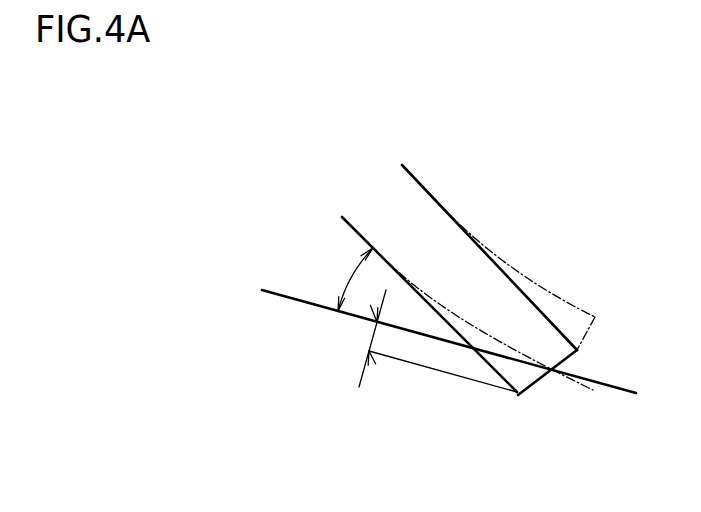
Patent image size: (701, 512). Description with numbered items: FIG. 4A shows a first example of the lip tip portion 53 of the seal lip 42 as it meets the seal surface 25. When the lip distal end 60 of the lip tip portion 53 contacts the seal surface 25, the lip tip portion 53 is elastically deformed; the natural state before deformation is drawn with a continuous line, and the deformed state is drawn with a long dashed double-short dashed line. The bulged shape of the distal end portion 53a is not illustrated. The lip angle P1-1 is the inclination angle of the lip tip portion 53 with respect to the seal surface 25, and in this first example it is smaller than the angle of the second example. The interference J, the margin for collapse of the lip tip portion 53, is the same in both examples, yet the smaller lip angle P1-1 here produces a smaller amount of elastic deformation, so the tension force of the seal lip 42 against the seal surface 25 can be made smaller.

The seal surface 25 is at (276, 293).
The seal lip 42 is at (436, 201).
The lip tip portion 53 is at (480, 249).
The distal end portion 53a is at (522, 373).
The lip distal end 60 is at (593, 390).
The lip angle P1-1 is at (329, 279).
The interference J is at (431, 341).